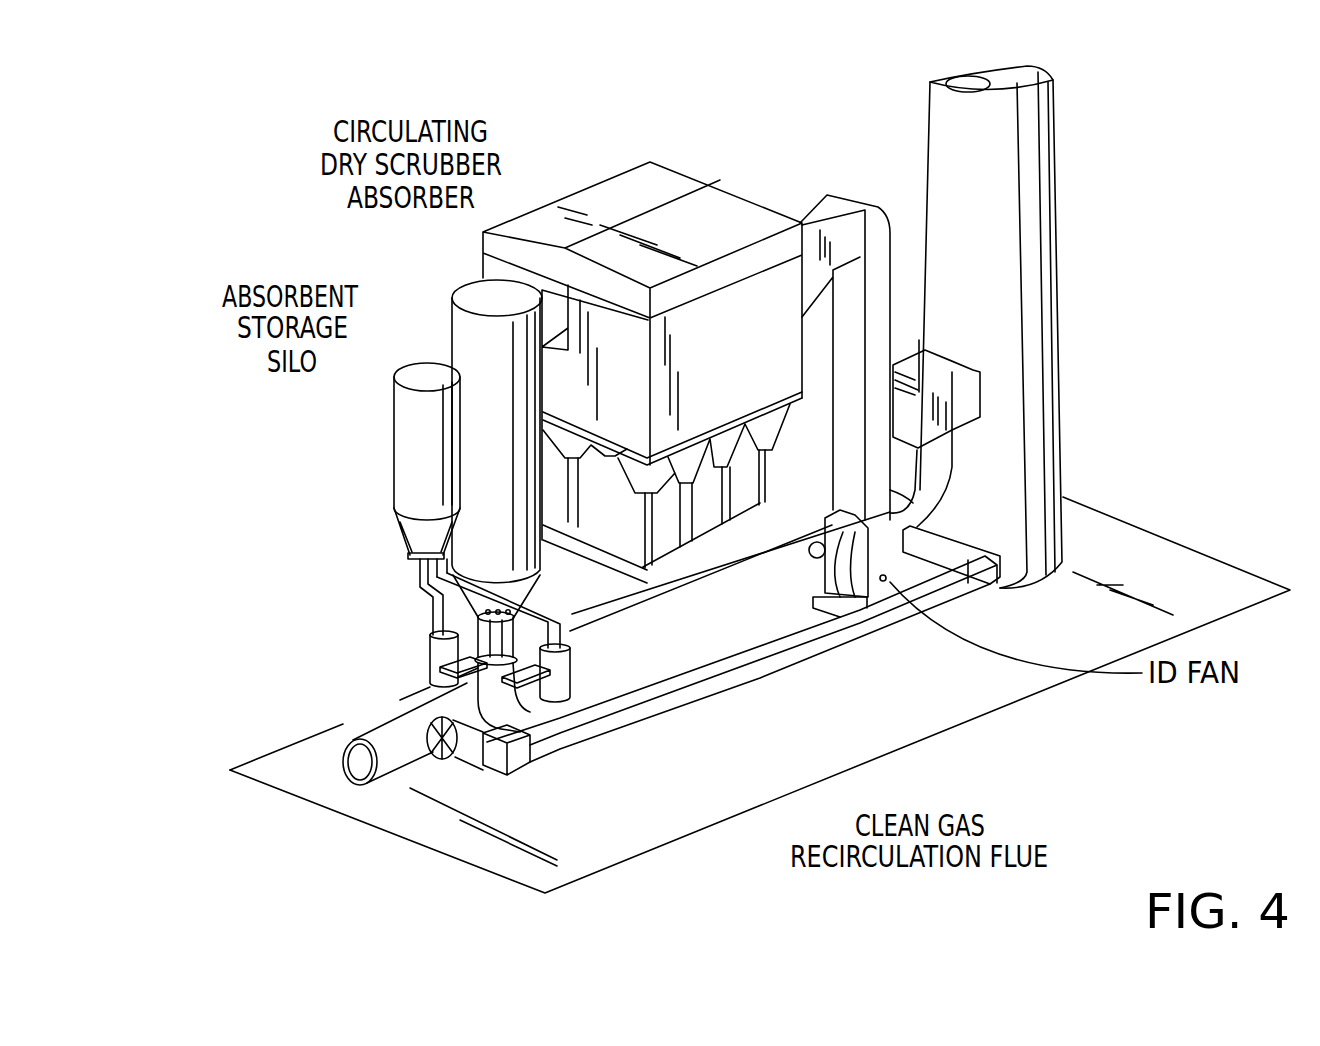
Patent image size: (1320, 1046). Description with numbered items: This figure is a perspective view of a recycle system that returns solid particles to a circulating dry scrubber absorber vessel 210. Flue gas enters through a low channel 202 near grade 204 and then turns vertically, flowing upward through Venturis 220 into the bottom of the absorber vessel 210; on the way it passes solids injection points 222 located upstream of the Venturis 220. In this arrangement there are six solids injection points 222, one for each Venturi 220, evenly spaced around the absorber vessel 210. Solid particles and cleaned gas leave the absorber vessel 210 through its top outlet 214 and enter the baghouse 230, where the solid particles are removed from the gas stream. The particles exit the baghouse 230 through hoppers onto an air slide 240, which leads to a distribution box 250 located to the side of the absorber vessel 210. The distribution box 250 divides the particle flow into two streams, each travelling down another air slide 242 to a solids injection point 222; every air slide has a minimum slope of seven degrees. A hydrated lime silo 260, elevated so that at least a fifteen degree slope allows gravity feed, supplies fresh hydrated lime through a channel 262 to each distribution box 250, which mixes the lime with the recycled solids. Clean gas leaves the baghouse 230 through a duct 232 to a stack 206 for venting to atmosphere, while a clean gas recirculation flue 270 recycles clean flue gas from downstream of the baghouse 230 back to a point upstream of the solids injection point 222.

The flue gas inlet duct 202 is at (342, 737).
The grade 204 is at (322, 810).
The stack 206 is at (1013, 242).
The circulating dry scrubber absorber vessel 210 is at (480, 332).
The top outlet 214 is at (545, 287).
The Venturis 220 is at (430, 638).
The solids injection points 222 is at (486, 690).
The baghouse 230 is at (720, 210).
The duct 232 is at (867, 237).
The air slide 240 is at (700, 542).
The air slide 242 is at (577, 650).
The distribution box 250 is at (578, 655).
The hydrated lime silo 260 is at (430, 445).
The channel 262 is at (420, 588).
The clean gas recirculation flue 270 is at (697, 690).